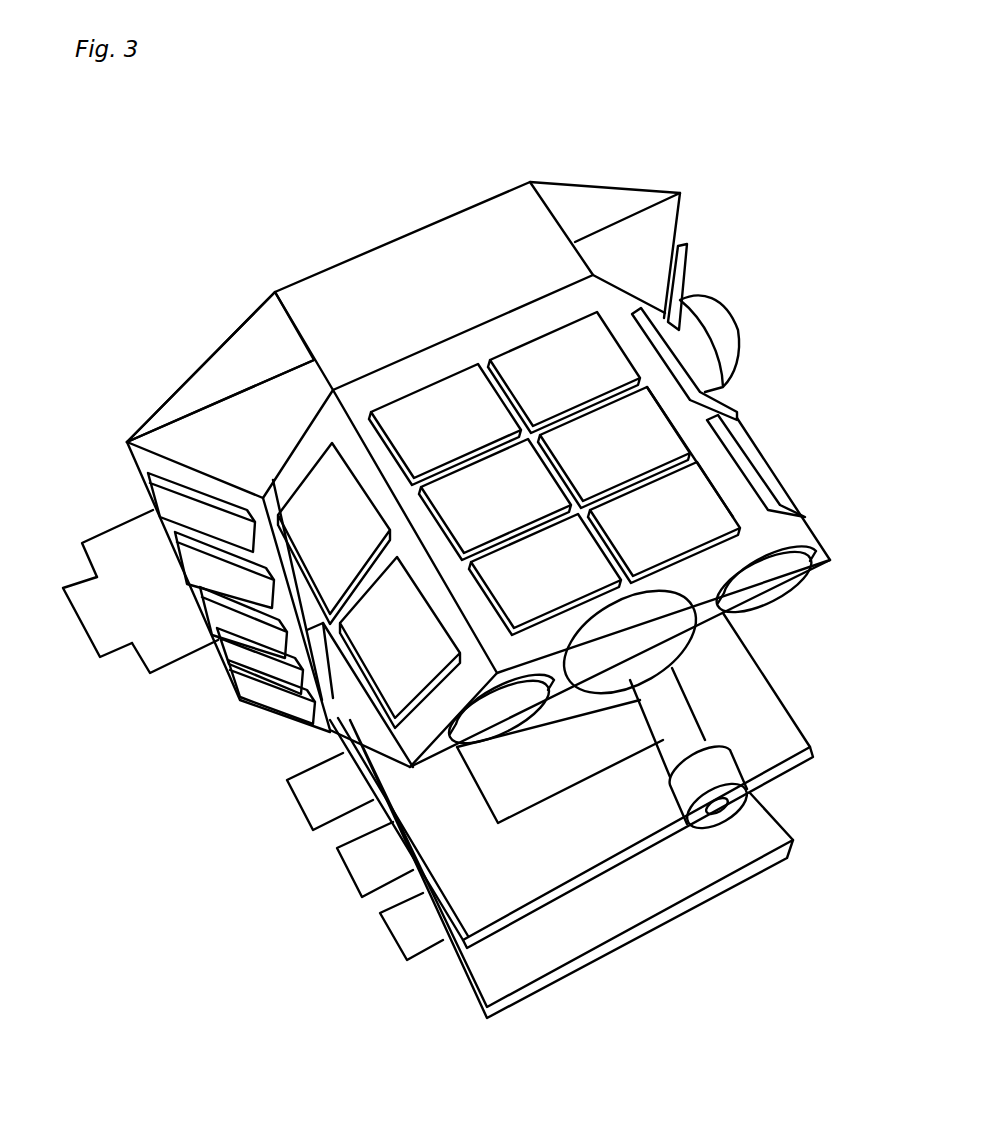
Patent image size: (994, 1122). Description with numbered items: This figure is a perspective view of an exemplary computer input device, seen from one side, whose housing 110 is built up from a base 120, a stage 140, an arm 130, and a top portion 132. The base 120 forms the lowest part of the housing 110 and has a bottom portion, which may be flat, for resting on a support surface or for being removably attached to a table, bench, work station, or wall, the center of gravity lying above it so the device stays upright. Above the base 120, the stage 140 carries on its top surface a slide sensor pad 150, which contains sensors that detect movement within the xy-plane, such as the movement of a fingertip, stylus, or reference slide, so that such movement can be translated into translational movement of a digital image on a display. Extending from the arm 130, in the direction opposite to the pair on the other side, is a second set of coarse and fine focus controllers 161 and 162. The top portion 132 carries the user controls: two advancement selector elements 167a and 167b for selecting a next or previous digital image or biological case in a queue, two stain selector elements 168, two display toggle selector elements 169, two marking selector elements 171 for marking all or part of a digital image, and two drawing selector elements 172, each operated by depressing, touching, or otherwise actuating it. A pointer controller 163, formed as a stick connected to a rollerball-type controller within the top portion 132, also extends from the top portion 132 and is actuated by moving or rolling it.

The housing 110 is at (415, 176).
The base 120 is at (687, 907).
The arm 130 is at (185, 445).
The top portion 132 is at (330, 713).
The stage 140 is at (780, 678).
The slide sensor pad 150 is at (538, 770).
The coarse focus controller 161 is at (130, 520).
The fine focus controller 162 is at (120, 655).
The pointer controller 163 is at (745, 768).
The advancement selector element 167a is at (303, 478).
The advancement selector element 167b is at (407, 540).
The stain selector element 168 is at (523, 485).
The display toggle selector element 169 is at (620, 430).
The marking selector element 171 is at (570, 562).
The drawing selector element 172 is at (768, 605).